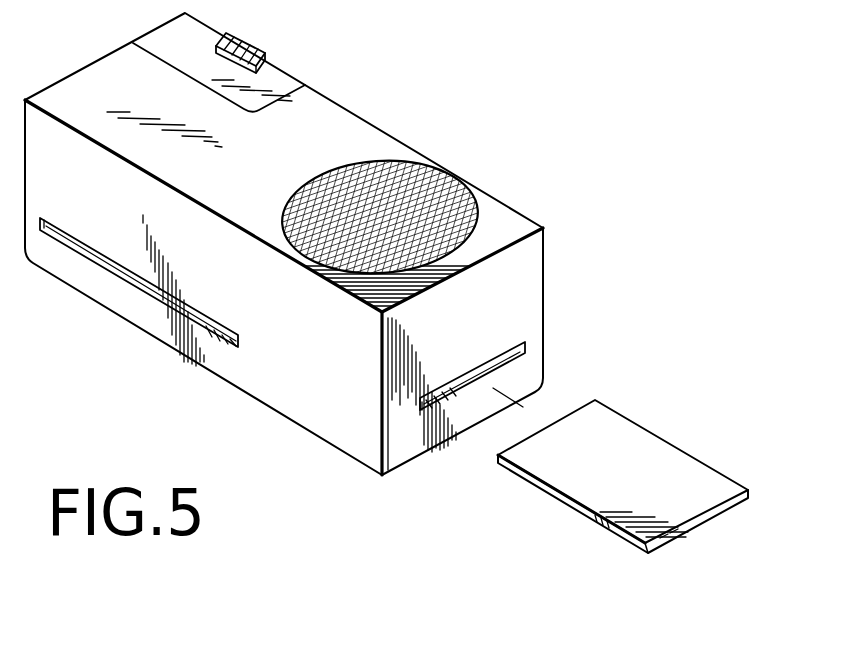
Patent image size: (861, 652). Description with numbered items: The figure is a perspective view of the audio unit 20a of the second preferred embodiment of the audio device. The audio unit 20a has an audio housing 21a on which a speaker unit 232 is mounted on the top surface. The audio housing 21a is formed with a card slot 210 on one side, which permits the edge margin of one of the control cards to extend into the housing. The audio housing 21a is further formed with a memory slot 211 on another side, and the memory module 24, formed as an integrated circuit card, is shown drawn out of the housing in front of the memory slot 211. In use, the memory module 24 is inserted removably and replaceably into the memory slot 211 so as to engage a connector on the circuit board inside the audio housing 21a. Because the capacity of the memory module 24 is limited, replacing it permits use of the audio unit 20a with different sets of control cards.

The audio unit 20a is at (328, 86).
The audio housing 21a is at (375, 143).
The speaker unit 232 is at (465, 211).
The card slot 210 is at (127, 277).
The memory slot 211 is at (508, 366).
The memory module 24 is at (633, 433).